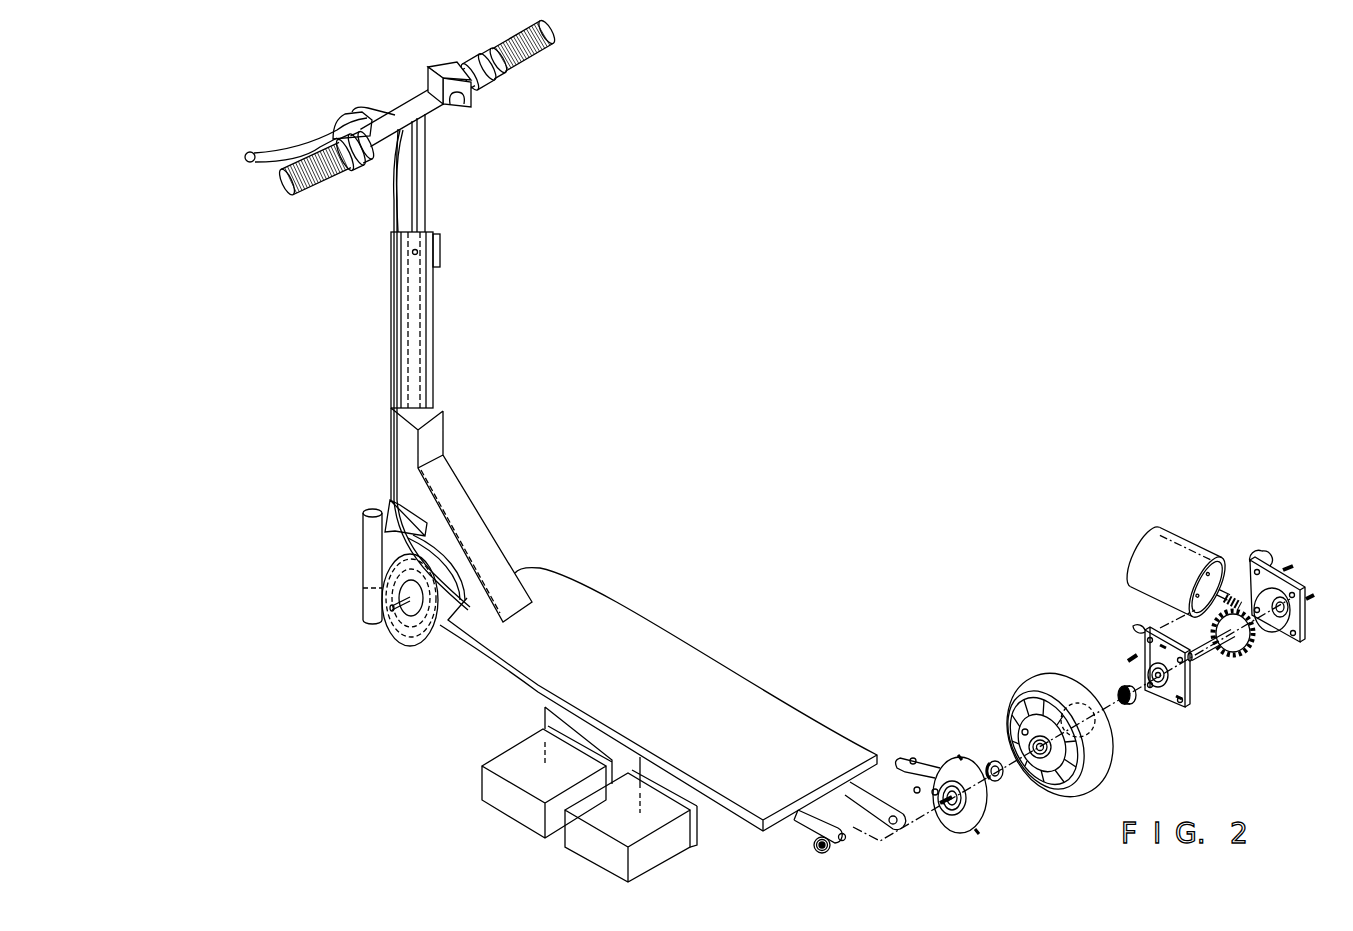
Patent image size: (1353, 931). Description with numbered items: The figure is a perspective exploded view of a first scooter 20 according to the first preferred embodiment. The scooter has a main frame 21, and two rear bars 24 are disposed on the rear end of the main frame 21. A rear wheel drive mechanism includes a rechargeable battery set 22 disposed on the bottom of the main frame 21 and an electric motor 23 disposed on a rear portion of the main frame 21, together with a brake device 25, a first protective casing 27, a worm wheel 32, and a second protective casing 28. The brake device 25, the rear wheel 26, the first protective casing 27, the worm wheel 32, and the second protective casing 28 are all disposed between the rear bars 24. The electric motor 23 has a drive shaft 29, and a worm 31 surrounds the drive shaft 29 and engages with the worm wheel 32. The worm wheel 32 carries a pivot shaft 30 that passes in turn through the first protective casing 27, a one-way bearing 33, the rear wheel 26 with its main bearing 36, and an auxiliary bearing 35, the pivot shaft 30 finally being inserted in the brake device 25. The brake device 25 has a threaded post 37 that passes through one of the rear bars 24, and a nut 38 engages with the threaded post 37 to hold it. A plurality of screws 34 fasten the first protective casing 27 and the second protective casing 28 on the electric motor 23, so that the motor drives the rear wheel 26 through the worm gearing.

The first scooter 20 is at (482, 468).
The main frame 21 is at (708, 673).
The rechargeable battery set 22 is at (508, 800).
The electric motor 23 is at (1190, 553).
The rear bars 24 is at (848, 842).
The brake device 25 is at (950, 760).
The rear wheel 26 is at (1103, 760).
The first protective casing 27 is at (1188, 683).
The second protective casing 28 is at (1290, 608).
The drive shaft 29 is at (1215, 600).
The pivot shaft 30 is at (1207, 653).
The worm 31 is at (1232, 593).
The worm wheel 32 is at (1252, 650).
The one-way bearing 33 is at (1132, 700).
The screws 34 is at (1292, 570).
The auxiliary bearing 35 is at (997, 777).
The main bearing 36 is at (1038, 747).
The threaded post 37 is at (940, 807).
The nut 38 is at (817, 847).